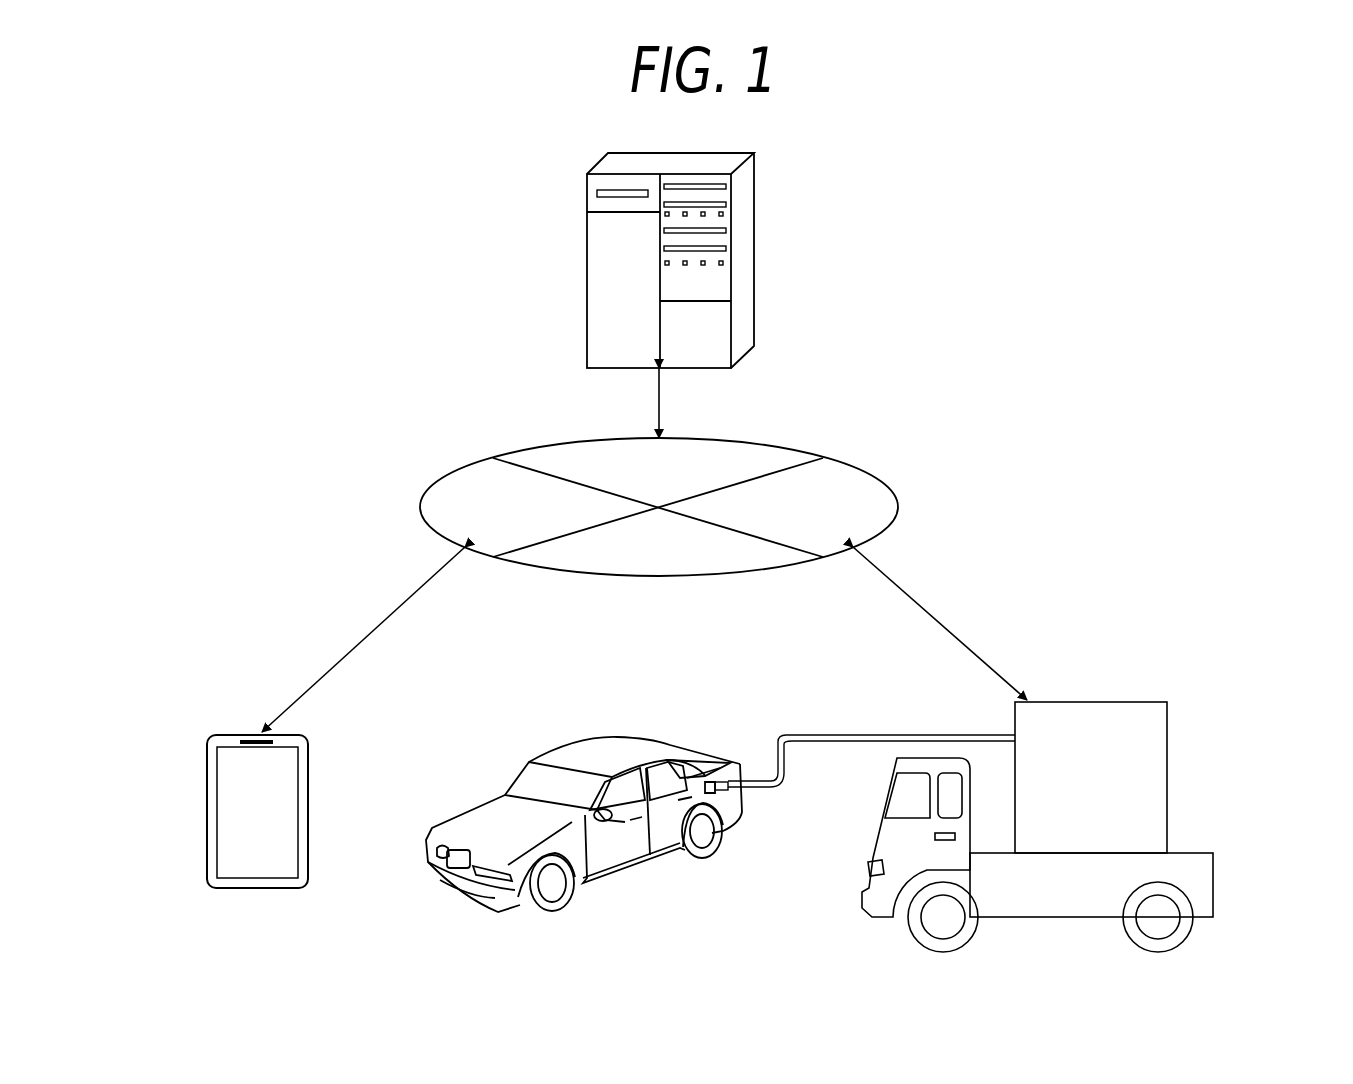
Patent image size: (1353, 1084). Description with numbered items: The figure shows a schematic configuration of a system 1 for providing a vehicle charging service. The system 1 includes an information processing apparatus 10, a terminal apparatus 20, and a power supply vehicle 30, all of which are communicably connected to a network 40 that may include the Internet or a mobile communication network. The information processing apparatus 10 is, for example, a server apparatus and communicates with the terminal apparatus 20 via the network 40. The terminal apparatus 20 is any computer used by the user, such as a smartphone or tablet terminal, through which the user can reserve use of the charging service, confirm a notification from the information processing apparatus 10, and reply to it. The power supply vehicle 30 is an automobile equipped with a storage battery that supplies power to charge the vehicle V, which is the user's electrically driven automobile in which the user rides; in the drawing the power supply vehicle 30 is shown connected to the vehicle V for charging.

The system 1 is at (926, 352).
The information processing apparatus 10 is at (587, 259).
The terminal apparatus 20 is at (230, 734).
The power supply vehicle 30 is at (1106, 702).
The network 40 is at (462, 470).
The vehicle V is at (576, 748).